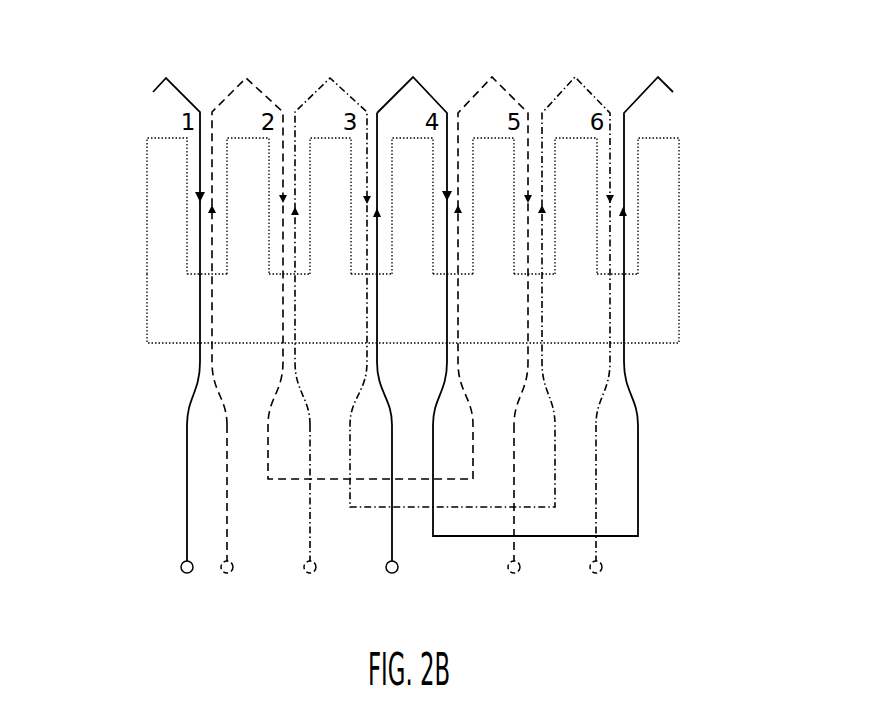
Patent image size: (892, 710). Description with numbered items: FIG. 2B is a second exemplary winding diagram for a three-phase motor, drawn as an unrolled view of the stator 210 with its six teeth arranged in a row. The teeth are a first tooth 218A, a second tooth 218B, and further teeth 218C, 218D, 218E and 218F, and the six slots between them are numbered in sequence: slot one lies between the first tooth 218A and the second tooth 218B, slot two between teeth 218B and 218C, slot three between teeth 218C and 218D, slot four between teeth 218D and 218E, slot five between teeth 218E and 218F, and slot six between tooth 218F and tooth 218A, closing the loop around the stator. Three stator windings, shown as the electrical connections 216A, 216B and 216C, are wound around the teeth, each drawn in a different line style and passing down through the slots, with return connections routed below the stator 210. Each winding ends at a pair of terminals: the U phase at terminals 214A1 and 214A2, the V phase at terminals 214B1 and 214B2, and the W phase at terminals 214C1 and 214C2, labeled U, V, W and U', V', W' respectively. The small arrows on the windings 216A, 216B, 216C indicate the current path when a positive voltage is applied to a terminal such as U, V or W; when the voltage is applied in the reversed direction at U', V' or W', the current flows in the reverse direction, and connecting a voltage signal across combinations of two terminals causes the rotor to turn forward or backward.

The stator core 210 is at (668, 331).
The electrical connection 216A is at (255, 79).
The electrical connection 216B is at (339, 79).
The electrical connection 216C is at (174, 76).
The first tooth 218A is at (164, 153).
The second tooth 218B is at (239, 153).
The tooth 218C is at (321, 156).
The tooth 218D is at (424, 164).
The tooth 218E is at (499, 156).
The tooth 218F is at (590, 161).
The W' coil terminal 214C2 is at (186, 529).
The U coil terminal 214A1 is at (228, 529).
The V coil terminal 214B1 is at (309, 529).
The W coil terminal 214C1 is at (390, 529).
The U' coil terminal 214A2 is at (514, 529).
The V' coil terminal 214B2 is at (595, 529).